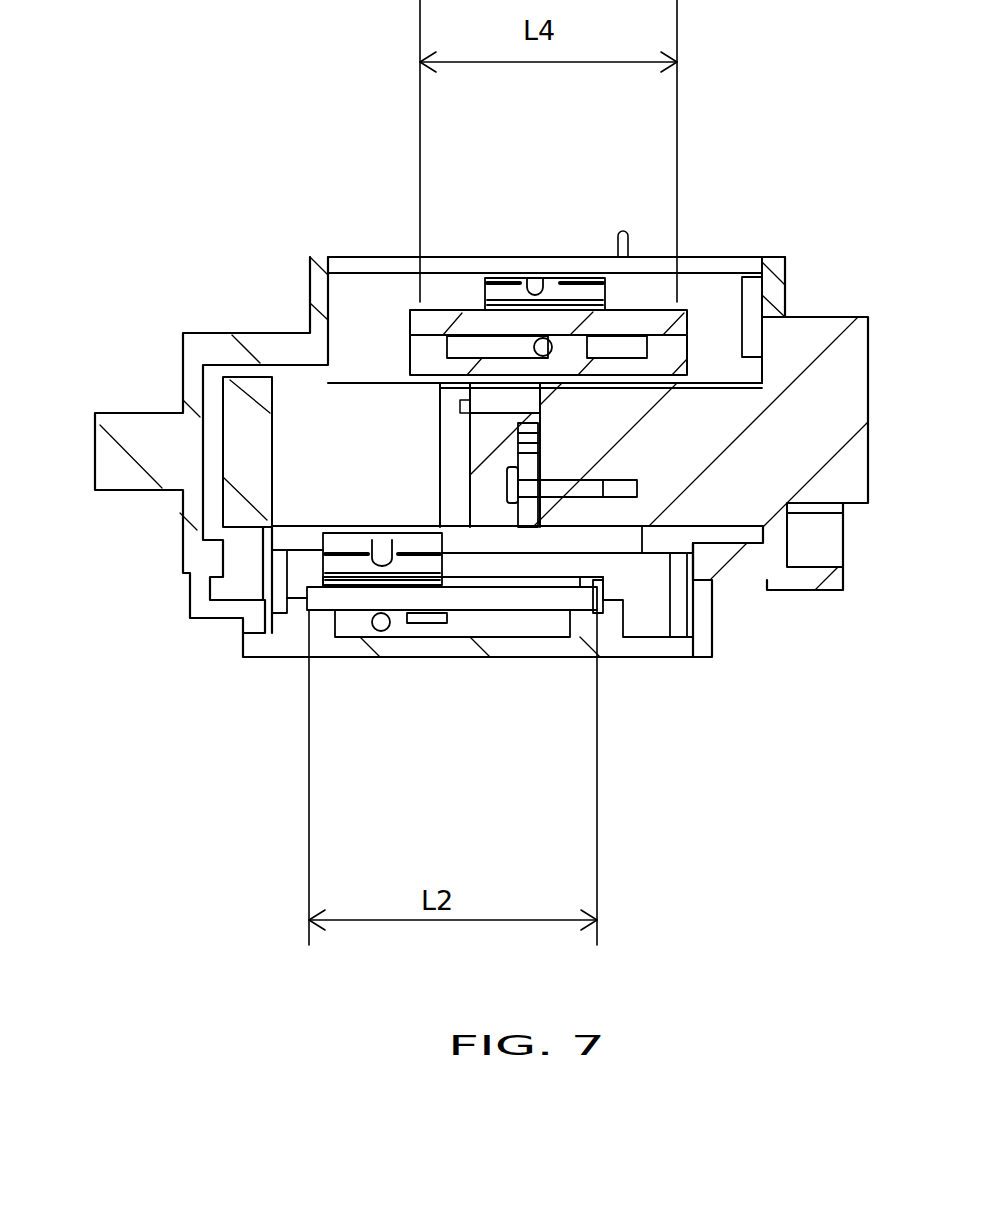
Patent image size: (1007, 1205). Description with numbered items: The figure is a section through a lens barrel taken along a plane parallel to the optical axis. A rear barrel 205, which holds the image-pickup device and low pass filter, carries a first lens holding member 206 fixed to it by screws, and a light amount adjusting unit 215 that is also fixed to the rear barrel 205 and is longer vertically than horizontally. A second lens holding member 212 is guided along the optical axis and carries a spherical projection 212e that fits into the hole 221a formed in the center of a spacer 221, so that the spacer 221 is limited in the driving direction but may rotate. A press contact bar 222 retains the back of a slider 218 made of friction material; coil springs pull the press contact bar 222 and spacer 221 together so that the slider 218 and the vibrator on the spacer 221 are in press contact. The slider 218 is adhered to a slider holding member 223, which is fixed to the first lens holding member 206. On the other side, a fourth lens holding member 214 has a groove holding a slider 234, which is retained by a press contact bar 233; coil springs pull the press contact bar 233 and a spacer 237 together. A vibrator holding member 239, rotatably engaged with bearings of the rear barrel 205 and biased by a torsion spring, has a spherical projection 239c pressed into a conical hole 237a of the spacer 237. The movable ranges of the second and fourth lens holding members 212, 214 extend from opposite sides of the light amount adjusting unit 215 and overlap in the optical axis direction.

The rear barrel 205 is at (806, 580).
The first lens holding member 206 is at (190, 607).
The second lens holding member 212 is at (257, 627).
The spherical projection 212e is at (347, 543).
The fourth lens holding member 214 is at (690, 357).
The light amount adjusting unit 215 is at (455, 473).
The slider 218 is at (538, 607).
The spacer 221 is at (445, 556).
The hole 221a is at (425, 562).
The press contact bar 222 is at (383, 643).
The slider holding member 223 is at (653, 660).
The press contact bar 233 is at (557, 345).
The slider 234 is at (425, 330).
The spacer 237 is at (495, 283).
The conical hole 237a is at (497, 258).
The vibrator holding member 239 is at (760, 262).
The spherical projection 239c is at (546, 291).